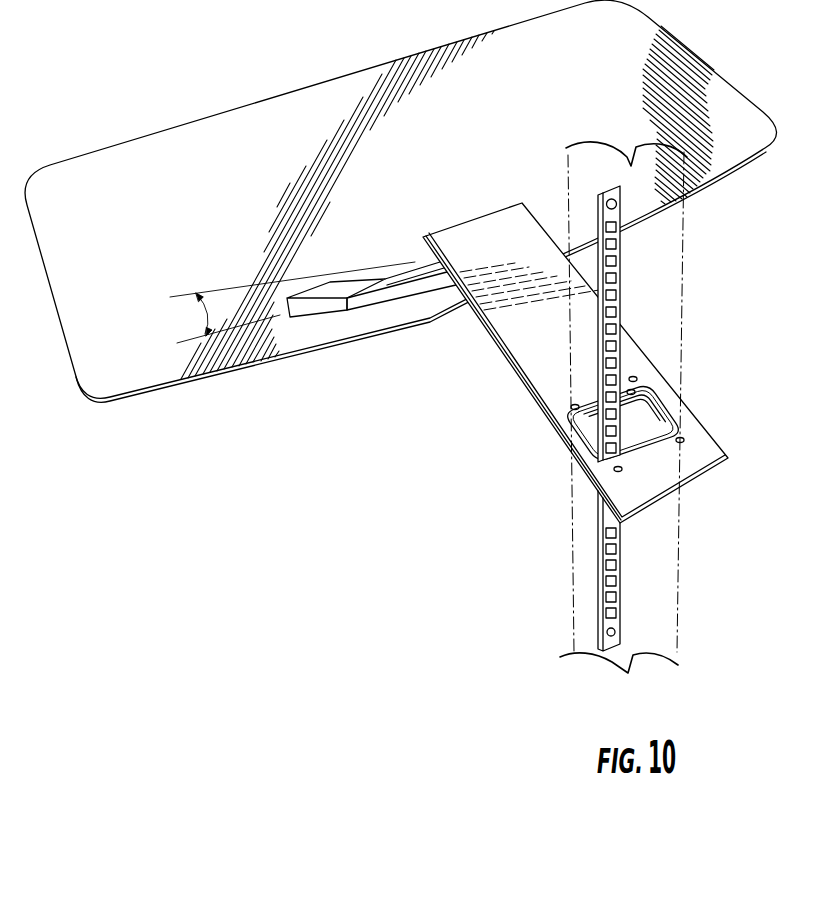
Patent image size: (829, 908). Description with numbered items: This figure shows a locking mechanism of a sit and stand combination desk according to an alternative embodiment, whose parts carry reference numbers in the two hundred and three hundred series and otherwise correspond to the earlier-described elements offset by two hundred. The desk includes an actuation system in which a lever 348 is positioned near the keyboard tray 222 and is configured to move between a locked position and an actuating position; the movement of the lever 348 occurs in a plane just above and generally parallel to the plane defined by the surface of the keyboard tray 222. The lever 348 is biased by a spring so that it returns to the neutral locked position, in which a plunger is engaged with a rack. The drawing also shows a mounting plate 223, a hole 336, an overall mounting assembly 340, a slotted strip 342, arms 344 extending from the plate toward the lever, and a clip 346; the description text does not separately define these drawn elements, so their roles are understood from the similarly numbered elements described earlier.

The keyboard tray 222 is at (92, 165).
The mounting plate 223 is at (540, 380).
The mounting hole 336 is at (622, 212).
The mounting assembly 340 is at (541, 443).
The slotted mounting strip 342 is at (622, 283).
The arm 344 is at (443, 282).
The clip 346 is at (640, 410).
The lever 348 is at (312, 308).